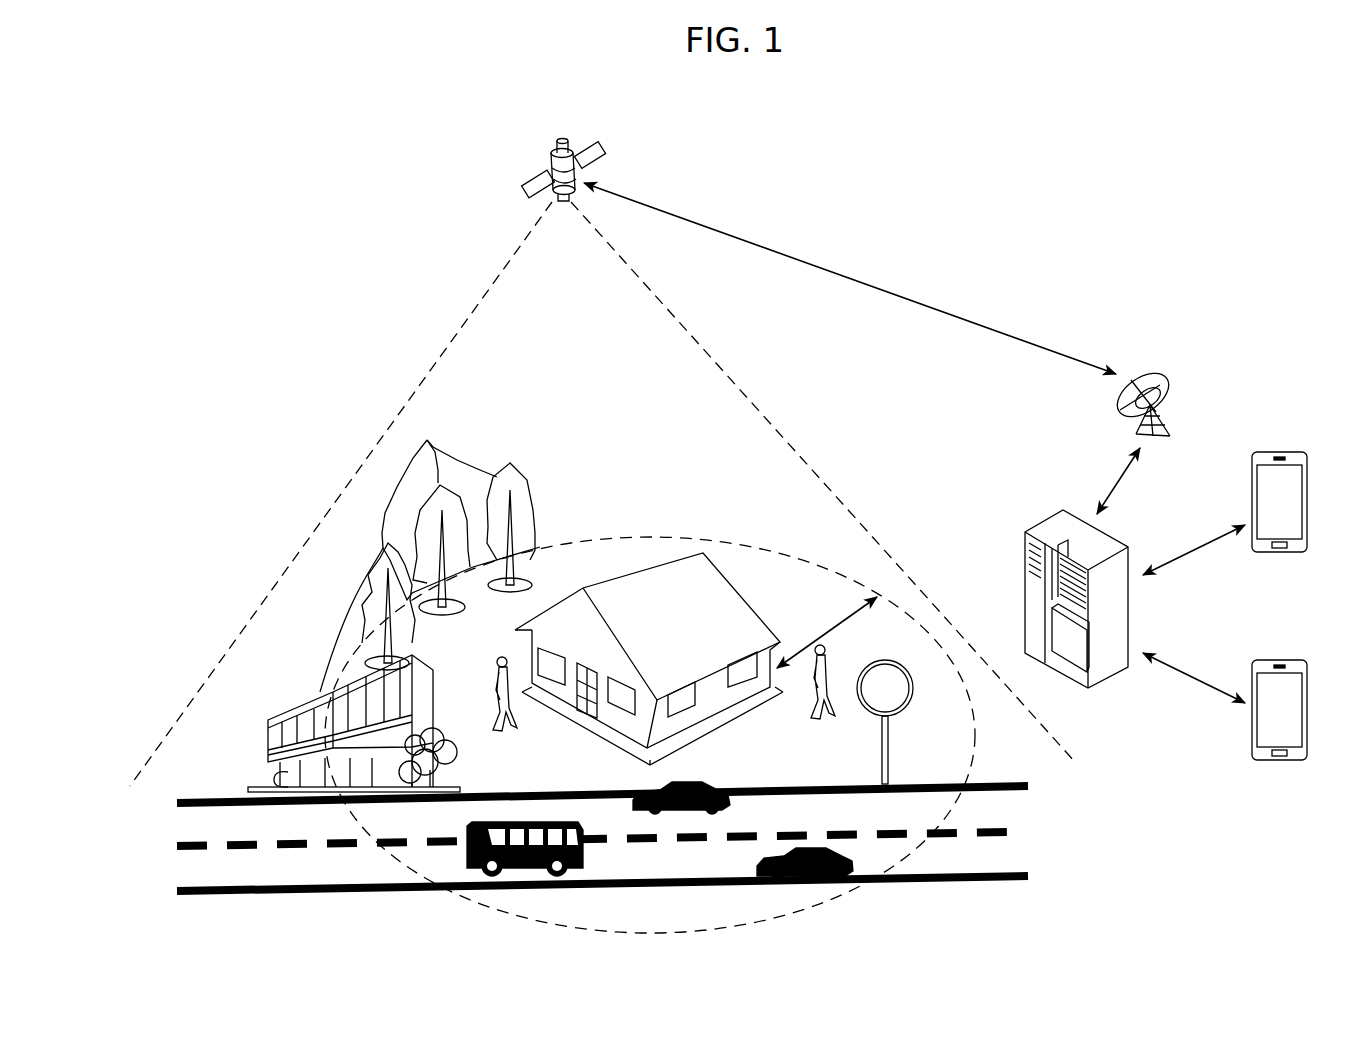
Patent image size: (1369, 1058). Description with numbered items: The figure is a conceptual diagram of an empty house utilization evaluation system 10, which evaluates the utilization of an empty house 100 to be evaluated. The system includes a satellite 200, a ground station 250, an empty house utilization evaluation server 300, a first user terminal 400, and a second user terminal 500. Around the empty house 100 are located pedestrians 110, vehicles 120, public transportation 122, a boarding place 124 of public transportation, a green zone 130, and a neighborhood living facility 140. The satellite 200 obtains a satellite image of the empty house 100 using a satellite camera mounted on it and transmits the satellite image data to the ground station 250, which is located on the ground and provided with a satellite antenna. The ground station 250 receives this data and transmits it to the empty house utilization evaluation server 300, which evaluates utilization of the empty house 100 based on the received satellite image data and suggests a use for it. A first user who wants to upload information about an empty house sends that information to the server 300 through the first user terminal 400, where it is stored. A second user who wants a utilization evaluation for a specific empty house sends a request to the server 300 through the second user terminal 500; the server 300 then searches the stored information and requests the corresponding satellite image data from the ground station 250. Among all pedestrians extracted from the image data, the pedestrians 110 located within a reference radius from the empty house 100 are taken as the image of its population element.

The empty house utilization evaluation system 10 is at (1194, 97).
The empty house to be evaluated 100 is at (753, 609).
The pedestrians 110 is at (513, 728).
The vehicles 120 is at (693, 785).
The public transportation 122 is at (585, 857).
The boarding place of public transportation 124 is at (888, 732).
The green zone 130 is at (427, 440).
The neighborhood living facility 140 is at (290, 708).
The satellite 200 is at (547, 150).
The ground station 250 is at (1166, 380).
The empty house utilization evaluation server 300 is at (1043, 521).
The first user terminal 400 is at (1288, 450).
The second user terminal 500 is at (1288, 658).